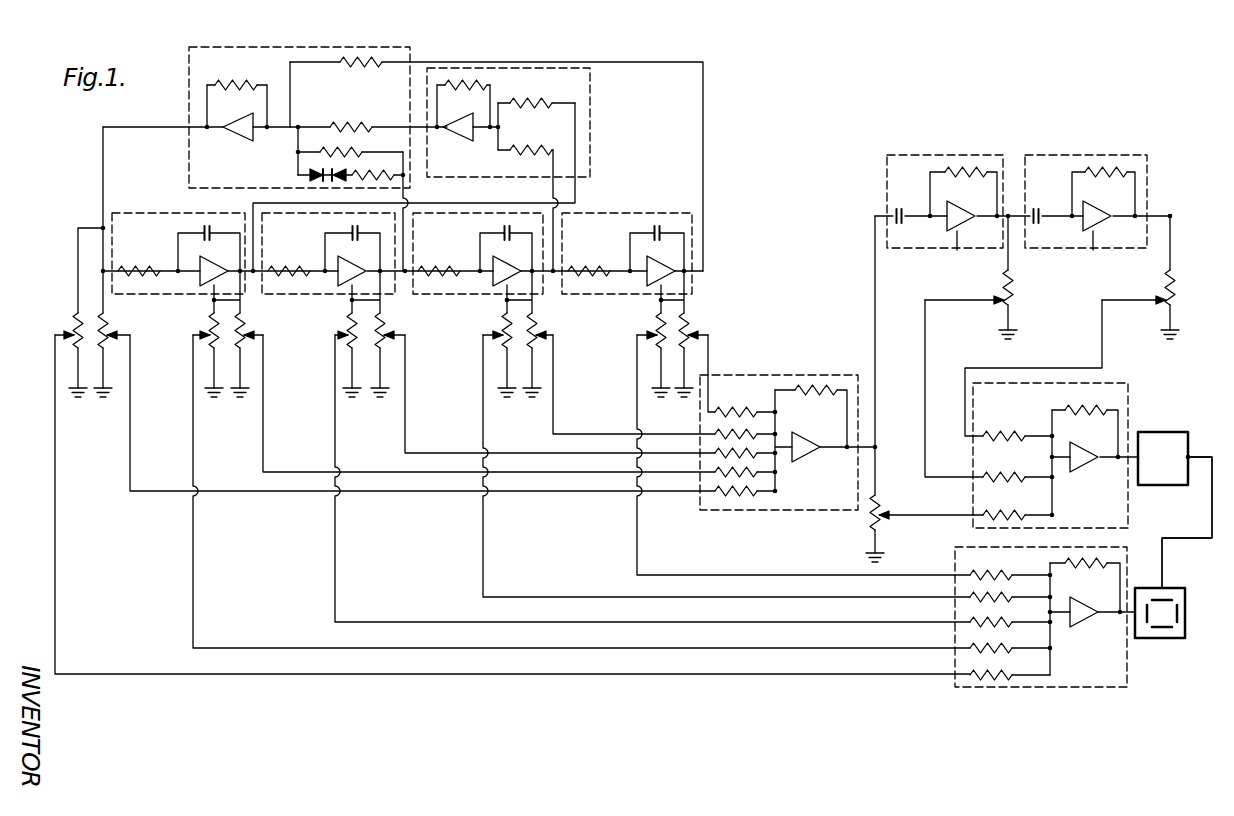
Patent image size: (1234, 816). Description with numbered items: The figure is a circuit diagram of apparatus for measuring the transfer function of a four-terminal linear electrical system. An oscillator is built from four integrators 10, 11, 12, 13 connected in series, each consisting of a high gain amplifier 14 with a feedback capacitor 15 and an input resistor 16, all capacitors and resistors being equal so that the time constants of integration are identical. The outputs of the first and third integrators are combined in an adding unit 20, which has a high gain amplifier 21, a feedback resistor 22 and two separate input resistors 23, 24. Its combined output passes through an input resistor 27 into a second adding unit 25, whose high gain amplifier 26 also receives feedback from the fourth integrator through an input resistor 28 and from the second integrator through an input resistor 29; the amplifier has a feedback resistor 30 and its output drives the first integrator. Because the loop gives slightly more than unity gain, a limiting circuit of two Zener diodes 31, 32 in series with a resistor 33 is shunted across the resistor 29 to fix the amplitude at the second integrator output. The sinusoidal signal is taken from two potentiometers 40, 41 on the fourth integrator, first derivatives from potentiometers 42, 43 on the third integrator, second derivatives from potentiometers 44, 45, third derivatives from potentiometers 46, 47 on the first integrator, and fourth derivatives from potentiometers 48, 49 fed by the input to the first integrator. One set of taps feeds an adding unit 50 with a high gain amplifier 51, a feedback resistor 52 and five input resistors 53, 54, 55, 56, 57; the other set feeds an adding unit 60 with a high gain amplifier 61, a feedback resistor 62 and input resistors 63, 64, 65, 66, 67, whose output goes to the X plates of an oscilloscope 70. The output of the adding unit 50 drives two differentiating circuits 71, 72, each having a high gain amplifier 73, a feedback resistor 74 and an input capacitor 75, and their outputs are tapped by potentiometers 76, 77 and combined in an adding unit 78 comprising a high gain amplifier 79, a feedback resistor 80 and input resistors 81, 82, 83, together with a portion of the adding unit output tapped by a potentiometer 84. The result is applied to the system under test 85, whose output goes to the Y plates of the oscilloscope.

The first integrator 10 is at (128, 214).
The second integrator 11 is at (275, 213).
The third integrator 12 is at (443, 212).
The fourth integrator 13 is at (588, 212).
The high gain amplifier 14 is at (230, 258).
The feedback capacitor 15 is at (205, 226).
The input resistor 16 is at (137, 268).
The adding unit 20 is at (592, 147).
The high gain amplifier 21 is at (463, 138).
The feedback resistor 22 is at (452, 86).
The input resistor 23 is at (516, 152).
The input resistor 24 is at (518, 104).
The second adding unit 25 is at (189, 95).
The high gain amplifier 26 is at (235, 135).
The input resistor 27 is at (331, 125).
The input resistor 28 is at (343, 64).
The input resistor 29 is at (348, 150).
The feedback resistor 30 is at (210, 84).
The Zener diode 31 is at (310, 177).
The Zener diode 32 is at (340, 181).
The resistor 33 is at (378, 174).
The potentiometer 40 is at (690, 322).
The potentiometer 41 is at (657, 322).
The potentiometer 42 is at (536, 322).
The potentiometer 43 is at (503, 322).
The potentiometer 44 is at (386, 322).
The potentiometer 45 is at (348, 322).
The potentiometer 46 is at (246, 322).
The potentiometer 47 is at (210, 320).
The potentiometer 48 is at (108, 328).
The potentiometer 49 is at (82, 335).
The adding unit 50 is at (715, 376).
The high gain amplifier 51 is at (806, 445).
The feedback resistor 52 is at (797, 390).
The input resistor 53 is at (726, 412).
The input resistor 54 is at (728, 434).
The input resistor 55 is at (730, 451).
The input resistor 56 is at (757, 471).
The input resistor 57 is at (757, 490).
The adding unit 60 is at (1125, 650).
The high gain amplifier 61 is at (1081, 618).
The feedback resistor 62 is at (1086, 565).
The input resistor 63 is at (1007, 577).
The input resistor 64 is at (972, 596).
The input resistor 65 is at (975, 628).
The input resistor 66 is at (972, 650).
The input resistor 67 is at (1012, 676).
The oscilloscope 70 is at (1166, 640).
The differentiating circuit 71 is at (905, 155).
The differentiating circuit 72 is at (1135, 155).
The high gain amplifier 73 is at (1108, 262).
The feedback resistor 74 is at (948, 171).
The input capacitor 75 is at (896, 209).
The potentiometer 76 is at (1013, 300).
The potentiometer 77 is at (1174, 301).
The adding unit 78 is at (1128, 512).
The high gain amplifier 79 is at (1079, 468).
The feedback resistor 80 is at (1106, 410).
The input resistor 81 is at (986, 433).
The input resistor 82 is at (988, 477).
The input resistor 83 is at (990, 515).
The potentiometer 84 is at (882, 514).
The system under test 85 is at (1165, 432).